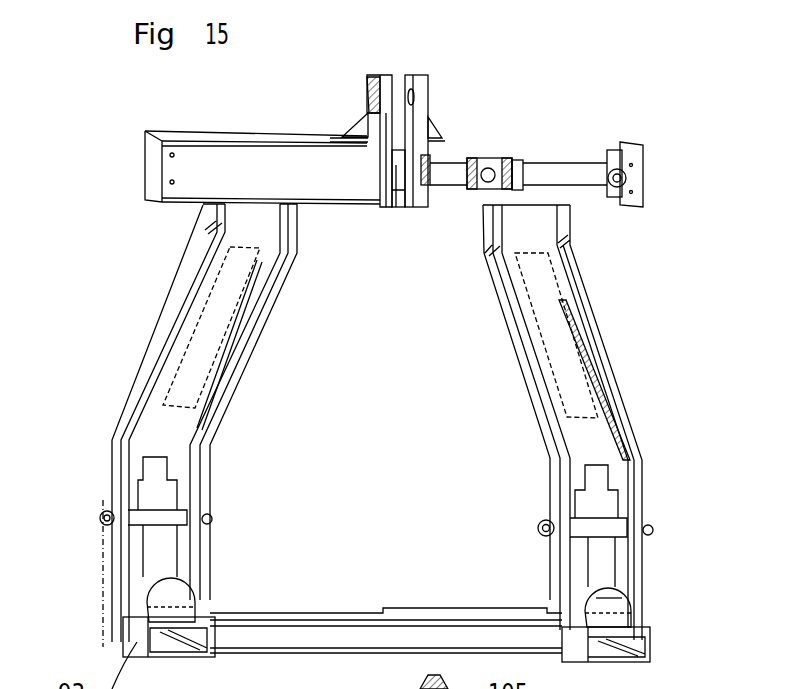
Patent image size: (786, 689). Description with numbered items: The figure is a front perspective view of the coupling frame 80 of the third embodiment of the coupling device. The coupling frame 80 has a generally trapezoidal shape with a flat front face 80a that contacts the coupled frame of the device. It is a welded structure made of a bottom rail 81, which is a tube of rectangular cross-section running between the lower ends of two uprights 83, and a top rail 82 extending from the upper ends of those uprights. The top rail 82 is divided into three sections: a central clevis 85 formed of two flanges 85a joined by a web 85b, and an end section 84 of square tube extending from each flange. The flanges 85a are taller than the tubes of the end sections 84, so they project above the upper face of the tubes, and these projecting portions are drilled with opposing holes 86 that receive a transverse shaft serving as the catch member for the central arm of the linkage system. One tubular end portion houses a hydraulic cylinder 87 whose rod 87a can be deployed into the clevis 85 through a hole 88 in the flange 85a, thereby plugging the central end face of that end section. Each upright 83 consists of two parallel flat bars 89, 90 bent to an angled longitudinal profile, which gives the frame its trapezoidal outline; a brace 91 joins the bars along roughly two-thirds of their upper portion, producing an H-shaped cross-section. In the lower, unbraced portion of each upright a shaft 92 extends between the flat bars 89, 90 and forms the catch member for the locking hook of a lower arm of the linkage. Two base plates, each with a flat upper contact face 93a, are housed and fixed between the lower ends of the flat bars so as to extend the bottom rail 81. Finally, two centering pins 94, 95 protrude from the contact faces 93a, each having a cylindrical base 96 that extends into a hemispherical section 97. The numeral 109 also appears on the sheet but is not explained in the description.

The coupling frame 80 is at (146, 312).
The flat front face 80a is at (607, 341).
The bottom rail 81 is at (389, 612).
The top rail 82 is at (130, 172).
The upright 83 is at (215, 447).
The end section 84 is at (250, 137).
The central clevis 85 is at (433, 72).
The flange 85a is at (428, 97).
The web 85b is at (395, 192).
The hole 86 is at (370, 104).
The hydraulic cylinder 87 is at (557, 174).
The rod 87a is at (445, 188).
The hole 88 is at (410, 170).
The flat bar 89 is at (114, 457).
The flat bar 90 is at (243, 366).
The brace 91 is at (238, 321).
The shaft 92 is at (150, 513).
The flat upper contact face 93a is at (137, 613).
The centering pin 94 is at (199, 593).
The centering pin 95 is at (639, 607).
The cylindrical base 96 is at (618, 626).
The hemispherical section 97 is at (613, 603).
The lower element 109 is at (376, 688).